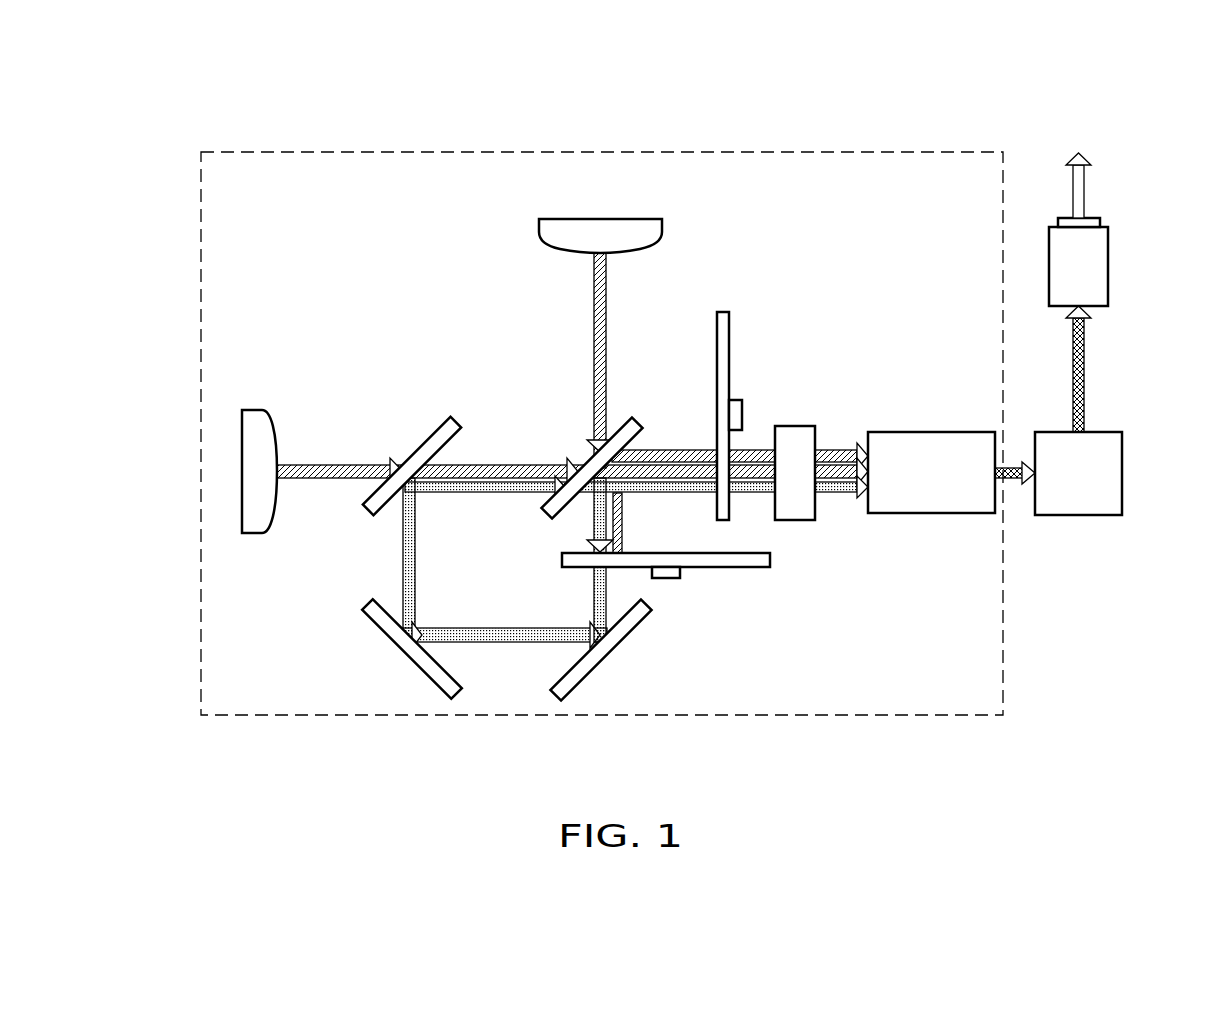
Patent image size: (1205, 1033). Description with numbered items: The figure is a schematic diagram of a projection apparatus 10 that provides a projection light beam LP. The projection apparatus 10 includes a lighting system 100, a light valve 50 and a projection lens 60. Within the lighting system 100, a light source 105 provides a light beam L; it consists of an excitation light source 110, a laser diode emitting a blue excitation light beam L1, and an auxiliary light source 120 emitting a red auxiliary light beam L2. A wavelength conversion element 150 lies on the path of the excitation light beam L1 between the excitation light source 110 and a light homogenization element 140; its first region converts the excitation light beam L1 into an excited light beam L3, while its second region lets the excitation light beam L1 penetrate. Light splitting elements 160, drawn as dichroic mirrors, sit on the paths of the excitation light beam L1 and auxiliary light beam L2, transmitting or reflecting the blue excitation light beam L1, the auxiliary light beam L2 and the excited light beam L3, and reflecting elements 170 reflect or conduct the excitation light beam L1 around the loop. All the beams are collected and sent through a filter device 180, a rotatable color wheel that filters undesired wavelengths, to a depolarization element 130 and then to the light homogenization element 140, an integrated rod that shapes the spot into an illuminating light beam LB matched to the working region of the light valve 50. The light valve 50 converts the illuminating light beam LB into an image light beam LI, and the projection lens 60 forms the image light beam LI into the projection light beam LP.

The projection apparatus 10 is at (1192, 752).
The lighting system 100 is at (900, 152).
The light source 105 is at (93, 48).
The excitation light source 110 is at (602, 236).
The auxiliary light source 120 is at (256, 428).
The depolarization element 130 is at (796, 425).
The light homogenization element 140 is at (950, 500).
The wavelength conversion element 150 is at (760, 562).
The light splitting element 160 is at (435, 445).
The reflecting element 170 is at (412, 652).
The filter device 180 is at (723, 343).
The light valve 50 is at (1110, 475).
The projection lens 60 is at (1097, 266).
The light beam L is at (239, 48).
The excitation light beam L1 is at (598, 347).
The auxiliary light beam L2 is at (333, 465).
The excited light beam L3 is at (622, 537).
The illuminating light beam LB is at (1015, 480).
The image light beam LI is at (1086, 372).
The projection light beam LP is at (1077, 187).